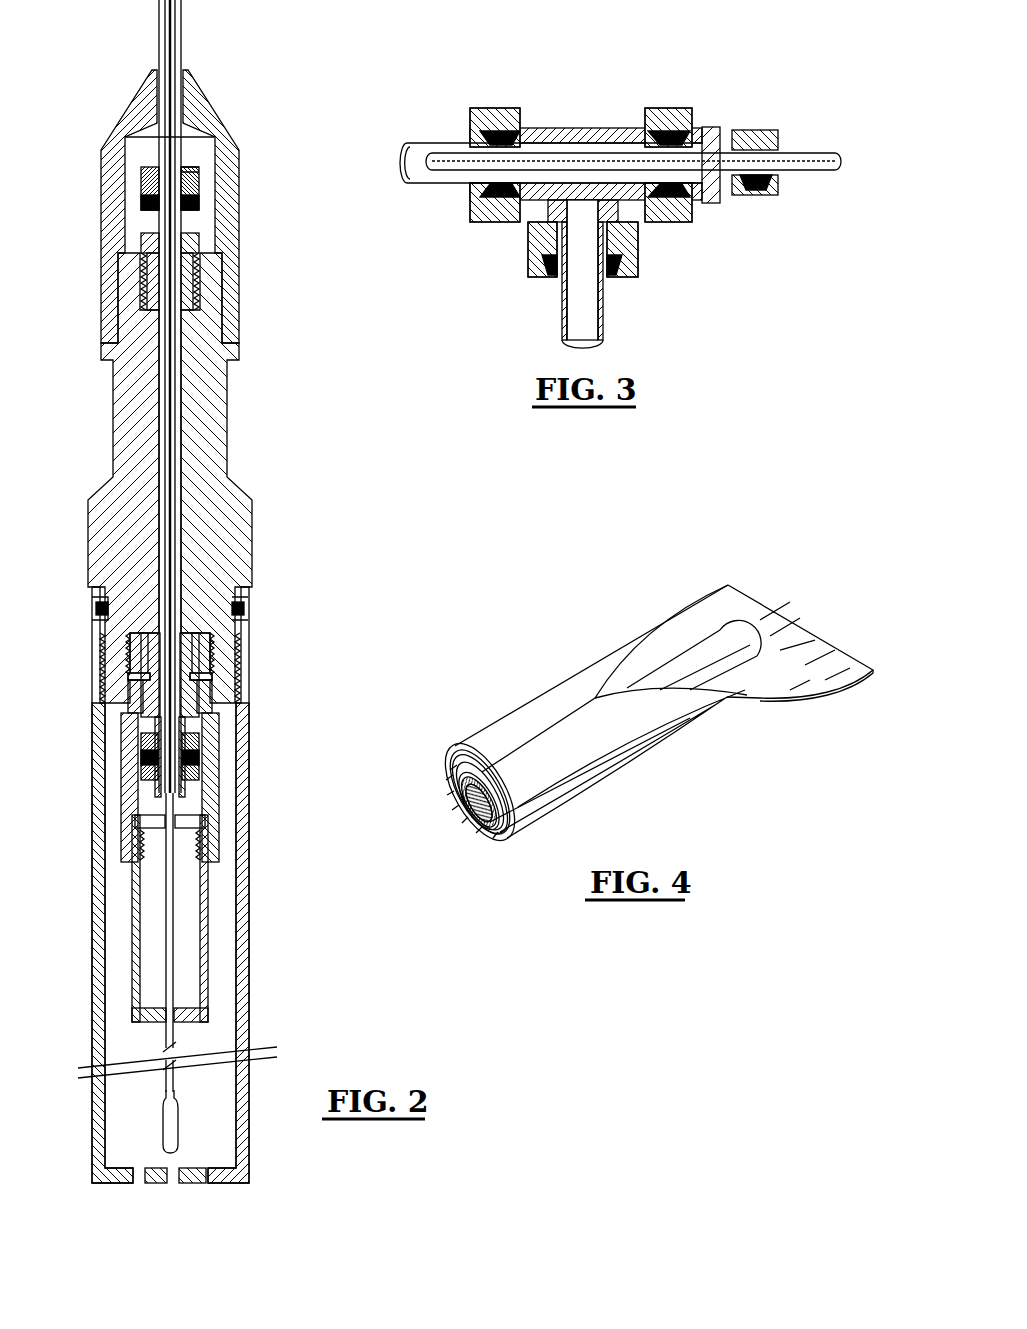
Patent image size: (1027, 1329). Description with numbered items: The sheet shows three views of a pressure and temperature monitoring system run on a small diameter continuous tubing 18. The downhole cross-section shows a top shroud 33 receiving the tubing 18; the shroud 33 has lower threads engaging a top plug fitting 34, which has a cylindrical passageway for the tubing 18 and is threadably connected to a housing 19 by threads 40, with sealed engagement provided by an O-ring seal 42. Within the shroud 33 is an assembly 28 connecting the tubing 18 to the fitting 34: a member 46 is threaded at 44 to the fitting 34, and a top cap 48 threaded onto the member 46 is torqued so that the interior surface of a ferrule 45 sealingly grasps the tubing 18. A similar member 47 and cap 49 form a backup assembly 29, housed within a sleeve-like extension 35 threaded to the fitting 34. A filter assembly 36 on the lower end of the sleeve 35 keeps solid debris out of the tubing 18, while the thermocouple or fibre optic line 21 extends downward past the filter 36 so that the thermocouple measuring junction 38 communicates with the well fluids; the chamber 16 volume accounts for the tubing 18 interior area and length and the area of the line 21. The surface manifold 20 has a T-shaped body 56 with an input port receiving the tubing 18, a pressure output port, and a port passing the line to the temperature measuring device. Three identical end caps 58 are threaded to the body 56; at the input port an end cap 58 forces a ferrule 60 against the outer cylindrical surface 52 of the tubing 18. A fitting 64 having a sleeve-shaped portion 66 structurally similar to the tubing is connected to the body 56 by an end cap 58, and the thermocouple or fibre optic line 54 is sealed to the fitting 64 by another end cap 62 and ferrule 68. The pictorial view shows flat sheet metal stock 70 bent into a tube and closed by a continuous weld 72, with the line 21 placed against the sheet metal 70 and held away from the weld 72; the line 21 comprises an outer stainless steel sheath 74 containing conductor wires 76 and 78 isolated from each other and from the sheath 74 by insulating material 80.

In FIG. 2, the chamber 16 is at (227, 977).
In FIG. 2, the small diameter continuous tubing 18 is at (181, 19).
In FIG. 3, the small diameter continuous tubing 18 is at (410, 136).
In FIG. 4, the small diameter continuous tubing 18 is at (503, 732).
In FIG. 2, the housing 19 is at (98, 978).
In FIG. 3, the manifold 20 is at (622, 107).
In FIG. 2, the thermocouple or fibre optic line 21 is at (175, 908).
In FIG. 4, the thermocouple or fibre optic line 21 is at (685, 670).
In FIG. 2, the assembly 28 is at (138, 220).
In FIG. 2, the second or backup assembly 29 is at (192, 722).
In FIG. 2, the top shroud 33 is at (222, 188).
In FIG. 2, the top plug fitting 34 is at (200, 405).
In FIG. 2, the sleeve-like extension 35 is at (127, 740).
In FIG. 2, the filter assembly 36 is at (133, 907).
In FIG. 2, the thermocouple measuring junction 38 is at (163, 1114).
In FIG. 2, the threads 40 is at (100, 655).
In FIG. 2, the O-ring seal 42 is at (248, 608).
In FIG. 2, the threads 44 is at (145, 288).
In FIG. 2, the ferrule 45 is at (147, 198).
In FIG. 2, the member 46 is at (200, 253).
In FIG. 2, the member 47 is at (212, 693).
In FIG. 2, the top cap 48 is at (195, 172).
In FIG. 2, the cap 49 is at (198, 755).
In FIG. 3, the outer cylindrical surface 52 is at (452, 153).
In FIG. 3, the thermocouple or fibre optic line 54 is at (443, 160).
In FIG. 3, the body 56 is at (572, 140).
In FIG. 3, the end cap 58 is at (505, 108).
In FIG. 3, the ferrule 60 is at (475, 188).
In FIG. 3, the end cap 62 is at (763, 128).
In FIG. 3, the fitting 64 is at (712, 127).
In FIG. 3, the sleeve-shaped portion 66 is at (667, 120).
In FIG. 3, the ferrule 68 is at (757, 193).
In FIG. 4, the flat sheet metal stock 70 is at (765, 628).
In FIG. 4, the continuous weld 72 is at (550, 720).
In FIG. 4, the outer stainless steel sheath 74 is at (482, 832).
In FIG. 4, the conductor wire 76 is at (470, 823).
In FIG. 4, the conductor wire 78 is at (460, 813).
In FIG. 4, the insulating material 80 is at (457, 790).